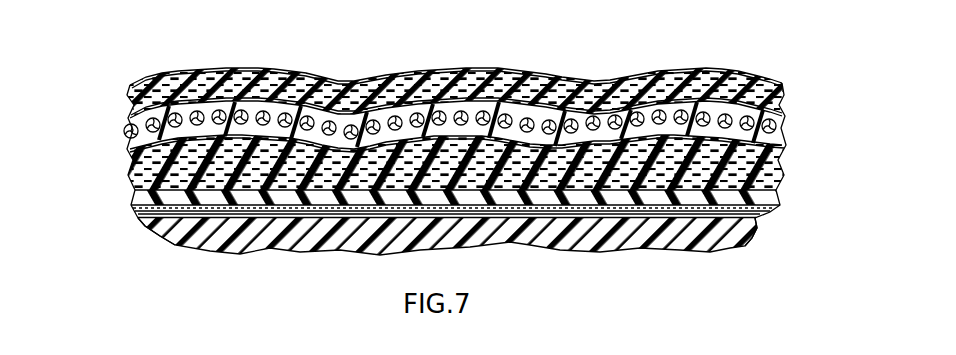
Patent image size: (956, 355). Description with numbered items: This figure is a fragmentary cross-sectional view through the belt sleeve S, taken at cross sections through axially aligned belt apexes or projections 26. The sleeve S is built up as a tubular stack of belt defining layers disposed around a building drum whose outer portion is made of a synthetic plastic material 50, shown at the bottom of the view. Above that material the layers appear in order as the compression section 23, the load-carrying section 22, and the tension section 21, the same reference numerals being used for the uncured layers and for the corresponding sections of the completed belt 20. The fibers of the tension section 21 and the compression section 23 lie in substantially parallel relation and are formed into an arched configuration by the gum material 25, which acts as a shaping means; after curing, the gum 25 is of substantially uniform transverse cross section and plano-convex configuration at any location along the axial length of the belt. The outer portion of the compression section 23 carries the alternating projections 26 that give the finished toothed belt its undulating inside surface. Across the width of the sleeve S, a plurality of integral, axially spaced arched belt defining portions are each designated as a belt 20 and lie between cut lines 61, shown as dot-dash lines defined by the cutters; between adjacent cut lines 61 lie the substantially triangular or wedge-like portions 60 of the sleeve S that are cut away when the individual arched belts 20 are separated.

The arched belt 20 is at (247, 66).
The tension section 21 is at (127, 99).
The load-carrying section 22 is at (122, 131).
The compression section 23 is at (416, 212).
The gum material 25 is at (725, 198).
The projections 26 is at (268, 216).
The synthetic plastic material 50 is at (215, 238).
The wedge-like portions 60 is at (368, 182).
The cut lines 61 is at (346, 100).
The belt sleeve S is at (772, 76).